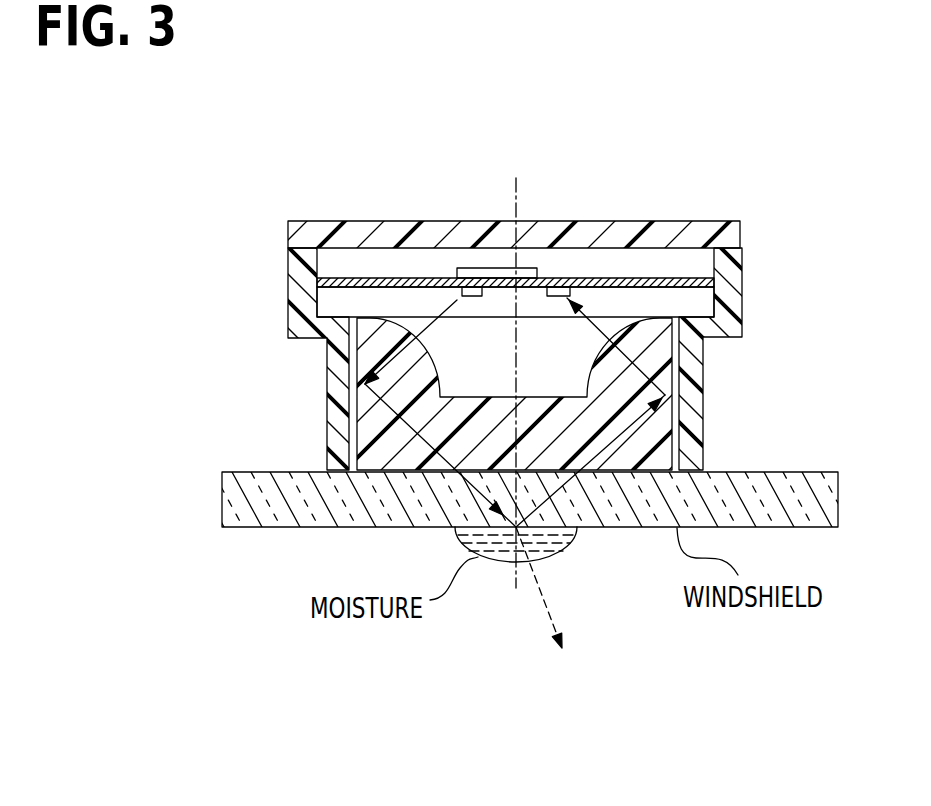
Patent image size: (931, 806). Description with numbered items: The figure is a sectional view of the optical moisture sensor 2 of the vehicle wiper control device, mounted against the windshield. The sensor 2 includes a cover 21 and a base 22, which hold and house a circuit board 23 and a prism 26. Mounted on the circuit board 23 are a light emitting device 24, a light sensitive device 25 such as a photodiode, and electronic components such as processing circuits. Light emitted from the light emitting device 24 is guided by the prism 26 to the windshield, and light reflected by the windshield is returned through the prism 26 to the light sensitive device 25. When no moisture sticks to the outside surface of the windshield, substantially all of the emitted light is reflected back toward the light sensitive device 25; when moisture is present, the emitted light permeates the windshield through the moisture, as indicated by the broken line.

The moisture sensor 2 is at (262, 204).
The cover 21 is at (712, 222).
The base 22 is at (703, 393).
The circuit board 23 is at (680, 278).
The light emitting device 24 is at (468, 297).
The light sensitive device 25 is at (547, 297).
The prism 26 is at (494, 397).